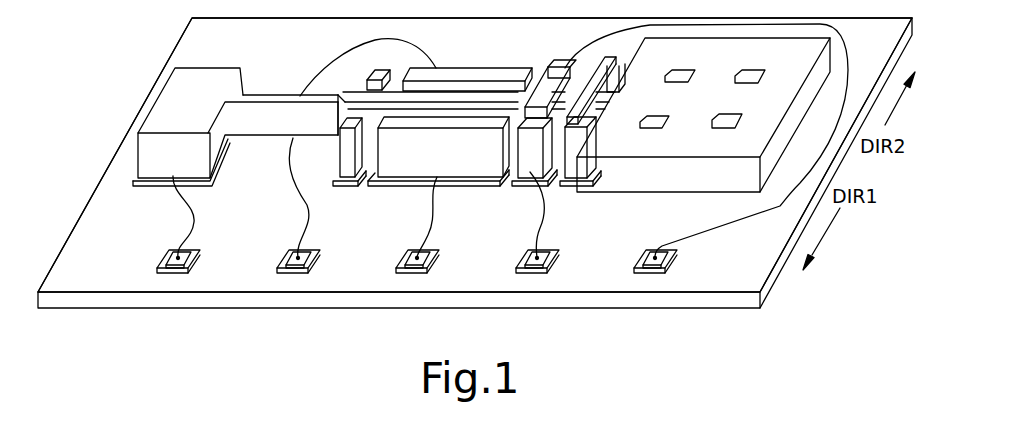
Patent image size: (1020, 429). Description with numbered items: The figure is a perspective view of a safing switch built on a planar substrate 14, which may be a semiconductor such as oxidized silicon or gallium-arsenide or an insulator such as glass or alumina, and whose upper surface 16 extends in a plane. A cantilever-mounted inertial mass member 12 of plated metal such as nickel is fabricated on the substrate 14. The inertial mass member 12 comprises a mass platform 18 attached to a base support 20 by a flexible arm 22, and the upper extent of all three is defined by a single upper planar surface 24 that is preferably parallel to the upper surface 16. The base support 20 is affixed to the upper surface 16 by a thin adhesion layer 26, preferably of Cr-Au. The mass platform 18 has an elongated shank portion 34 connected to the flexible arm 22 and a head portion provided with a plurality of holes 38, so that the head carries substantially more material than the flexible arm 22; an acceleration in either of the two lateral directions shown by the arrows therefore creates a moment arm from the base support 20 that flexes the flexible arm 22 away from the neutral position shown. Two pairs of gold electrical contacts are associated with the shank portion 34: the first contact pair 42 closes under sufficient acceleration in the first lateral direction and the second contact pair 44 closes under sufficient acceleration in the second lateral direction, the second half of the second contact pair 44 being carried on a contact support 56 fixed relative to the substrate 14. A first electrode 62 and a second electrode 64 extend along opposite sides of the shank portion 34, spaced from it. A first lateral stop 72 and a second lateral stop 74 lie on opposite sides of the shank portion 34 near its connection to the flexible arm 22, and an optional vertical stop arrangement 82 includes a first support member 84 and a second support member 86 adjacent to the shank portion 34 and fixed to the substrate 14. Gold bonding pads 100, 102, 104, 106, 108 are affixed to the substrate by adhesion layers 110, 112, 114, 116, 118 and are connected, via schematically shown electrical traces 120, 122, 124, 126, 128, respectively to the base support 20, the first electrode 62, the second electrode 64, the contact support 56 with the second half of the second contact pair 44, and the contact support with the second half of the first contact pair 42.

The inertial mass member 12 is at (263, 75).
The substrate 14 is at (90, 318).
The upper surface 16 is at (86, 240).
The mass platform 18 is at (651, 203).
The base support 20 is at (197, 77).
The flexible arm 22 is at (257, 130).
The upper planar surface 24 is at (290, 96).
The adhesion layer 26 is at (146, 188).
The shank portion 34 is at (337, 112).
The holes 38 is at (747, 83).
The first contact pair 42 is at (534, 57).
The second contact pair 44 is at (512, 82).
The contact support 56 is at (521, 183).
The first electrode 62 is at (460, 73).
The second electrode 64 is at (405, 175).
The first lateral stop 72 is at (372, 73).
The second lateral stop 74 is at (345, 148).
The vertical stop arrangement 82 is at (617, 102).
The first support member 84 is at (618, 80).
The second support member 86 is at (583, 132).
The first bonding pad 100 is at (177, 273).
The second bonding pad 102 is at (298, 275).
The third bonding pad 104 is at (417, 275).
The fourth bonding pad 106 is at (537, 275).
The fifth bonding pad 108 is at (655, 275).
The adhesion layer 110 is at (200, 258).
The adhesion layer 112 is at (320, 258).
The adhesion layer 114 is at (440, 258).
The adhesion layer 116 is at (558, 258).
The adhesion layer 118 is at (678, 258).
The electrical trace 120 is at (189, 207).
The electrical trace 122 is at (304, 196).
The electrical trace 124 is at (434, 222).
The electrical trace 126 is at (545, 210).
The electrical trace 128 is at (780, 205).